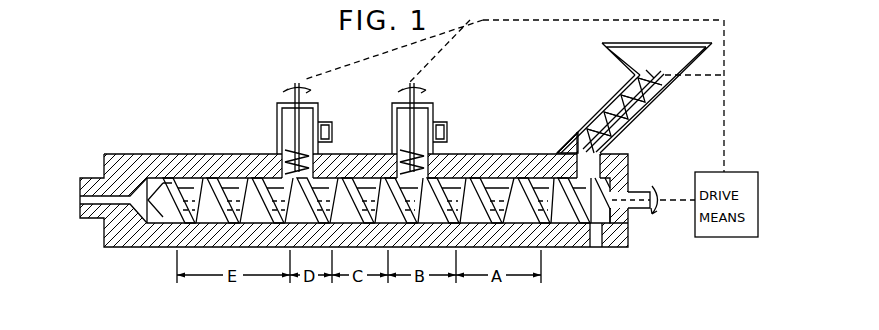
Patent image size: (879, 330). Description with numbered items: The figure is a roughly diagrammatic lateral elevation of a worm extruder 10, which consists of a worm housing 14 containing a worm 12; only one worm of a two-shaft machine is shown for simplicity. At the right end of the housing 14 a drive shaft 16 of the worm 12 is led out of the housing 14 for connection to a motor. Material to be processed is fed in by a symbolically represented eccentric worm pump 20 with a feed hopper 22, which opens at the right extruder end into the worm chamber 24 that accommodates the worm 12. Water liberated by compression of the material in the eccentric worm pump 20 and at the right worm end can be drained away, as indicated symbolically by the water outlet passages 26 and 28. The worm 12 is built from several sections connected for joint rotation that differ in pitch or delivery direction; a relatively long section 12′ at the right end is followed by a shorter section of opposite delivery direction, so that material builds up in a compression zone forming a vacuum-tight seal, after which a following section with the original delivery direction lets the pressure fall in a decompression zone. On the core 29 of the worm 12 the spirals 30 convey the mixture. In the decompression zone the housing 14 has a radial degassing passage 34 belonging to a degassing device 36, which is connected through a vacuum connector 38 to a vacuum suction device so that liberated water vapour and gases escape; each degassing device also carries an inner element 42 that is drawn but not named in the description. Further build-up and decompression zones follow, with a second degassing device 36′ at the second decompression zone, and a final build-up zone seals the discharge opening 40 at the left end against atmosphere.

The worm extruder 10 is at (488, 78).
The worm 12 is at (569, 282).
The relatively long section 12′ is at (538, 181).
The worm housing 14 is at (579, 257).
The drive shaft 16 is at (642, 196).
The eccentric worm pump 20 is at (593, 102).
The feed hopper 22 is at (625, 65).
The worm chamber 24 is at (612, 221).
The water outlet passage 26 is at (632, 130).
The water outlet passage 28 is at (598, 248).
The core 29 is at (503, 183).
The spirals 30 is at (463, 178).
The radial degassing passage 34 is at (388, 186).
The degassing device 36 is at (390, 97).
The second degassing device 36′ is at (273, 98).
The vacuum connector 38 is at (320, 122).
The discharge opening 40 is at (82, 197).
The feeder screw 42 is at (288, 160).